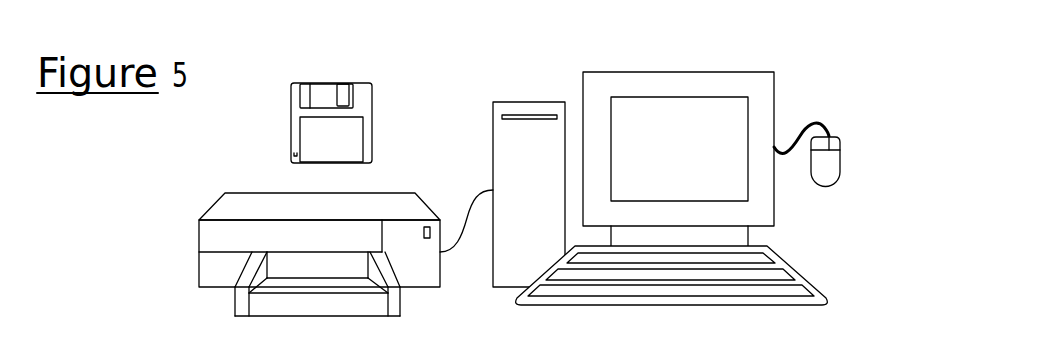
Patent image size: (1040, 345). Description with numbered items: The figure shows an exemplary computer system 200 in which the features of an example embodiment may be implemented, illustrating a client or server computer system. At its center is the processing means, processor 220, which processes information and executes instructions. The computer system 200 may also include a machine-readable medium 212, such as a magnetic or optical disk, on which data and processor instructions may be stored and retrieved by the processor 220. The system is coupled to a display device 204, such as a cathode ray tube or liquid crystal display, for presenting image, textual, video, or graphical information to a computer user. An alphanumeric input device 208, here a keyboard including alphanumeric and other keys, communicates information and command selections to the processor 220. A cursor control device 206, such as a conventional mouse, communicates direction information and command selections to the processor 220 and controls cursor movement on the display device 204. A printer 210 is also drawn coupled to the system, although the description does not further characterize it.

The computer system 200 is at (783, 56).
The display device 204 is at (731, 159).
The cursor control device 206 is at (877, 163).
The alphanumeric input device 208 is at (721, 286).
The printer 210 is at (267, 250).
The machine-readable medium 212 is at (327, 132).
The processor 220 is at (502, 175).